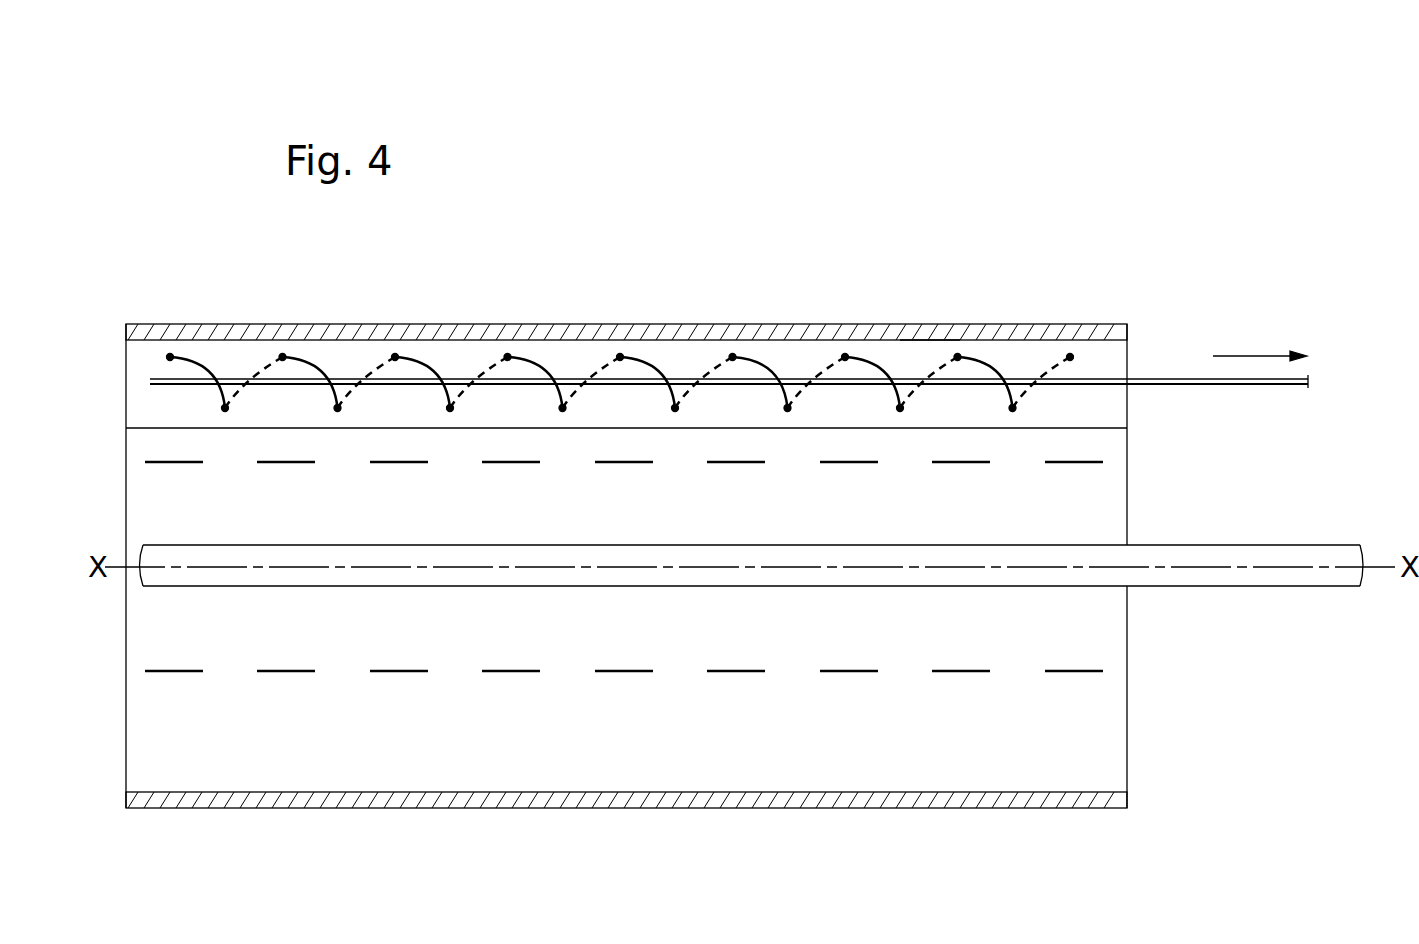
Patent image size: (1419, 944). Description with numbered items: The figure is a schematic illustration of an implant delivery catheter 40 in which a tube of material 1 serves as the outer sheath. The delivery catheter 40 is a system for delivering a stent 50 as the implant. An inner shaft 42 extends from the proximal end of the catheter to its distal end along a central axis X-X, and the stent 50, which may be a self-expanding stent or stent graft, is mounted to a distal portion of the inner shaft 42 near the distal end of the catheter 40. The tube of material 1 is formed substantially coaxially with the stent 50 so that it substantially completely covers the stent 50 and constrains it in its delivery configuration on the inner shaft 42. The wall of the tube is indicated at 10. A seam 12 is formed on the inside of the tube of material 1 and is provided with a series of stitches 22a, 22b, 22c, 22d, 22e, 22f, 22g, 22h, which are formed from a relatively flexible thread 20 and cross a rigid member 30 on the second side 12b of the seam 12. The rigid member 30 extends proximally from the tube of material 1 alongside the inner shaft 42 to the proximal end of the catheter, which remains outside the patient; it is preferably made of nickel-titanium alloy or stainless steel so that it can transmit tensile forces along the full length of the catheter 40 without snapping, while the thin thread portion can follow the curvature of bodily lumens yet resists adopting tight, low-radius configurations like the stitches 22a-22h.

The tube of material 1 is at (1116, 322).
The housing wall 10 is at (385, 324).
The seam 12 is at (1114, 400).
The second side of the seam 12b is at (930, 324).
The relatively flexible thread 20 is at (581, 366).
The stitch 22a is at (205, 324).
The stitch 22b is at (322, 324).
The stitch 22c is at (433, 324).
The stitch 22d is at (543, 324).
The stitch 22e is at (665, 324).
The stitch 22f is at (777, 324).
The stitch 22g is at (877, 324).
The stitch 22h is at (990, 324).
The rigid member 30 is at (1276, 386).
The implant delivery catheter 40 is at (858, 272).
The inner shaft 42 is at (1253, 574).
The stent 50 is at (1077, 465).